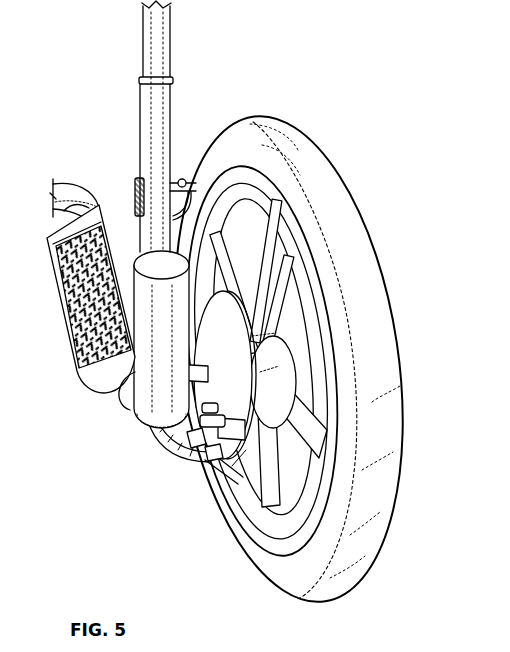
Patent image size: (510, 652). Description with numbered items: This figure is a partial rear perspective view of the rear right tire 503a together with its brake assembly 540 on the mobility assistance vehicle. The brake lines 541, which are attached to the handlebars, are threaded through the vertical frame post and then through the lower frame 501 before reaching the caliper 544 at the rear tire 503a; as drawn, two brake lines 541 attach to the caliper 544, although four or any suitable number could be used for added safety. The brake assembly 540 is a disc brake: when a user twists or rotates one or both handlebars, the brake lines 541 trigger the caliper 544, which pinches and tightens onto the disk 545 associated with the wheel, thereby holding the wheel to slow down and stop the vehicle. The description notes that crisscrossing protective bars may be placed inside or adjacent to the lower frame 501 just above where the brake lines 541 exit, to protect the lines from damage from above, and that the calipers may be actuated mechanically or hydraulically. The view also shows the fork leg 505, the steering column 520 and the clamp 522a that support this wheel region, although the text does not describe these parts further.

The lower frame 501 is at (66, 190).
The rear tire 503a is at (348, 190).
The fork leg 505 is at (134, 420).
The steering column 520 is at (162, 25).
The clamp 522a is at (137, 178).
The brake assembly 540 is at (172, 498).
The brake lines 541 is at (202, 450).
The caliper 544 is at (243, 435).
The disk 545 is at (240, 337).